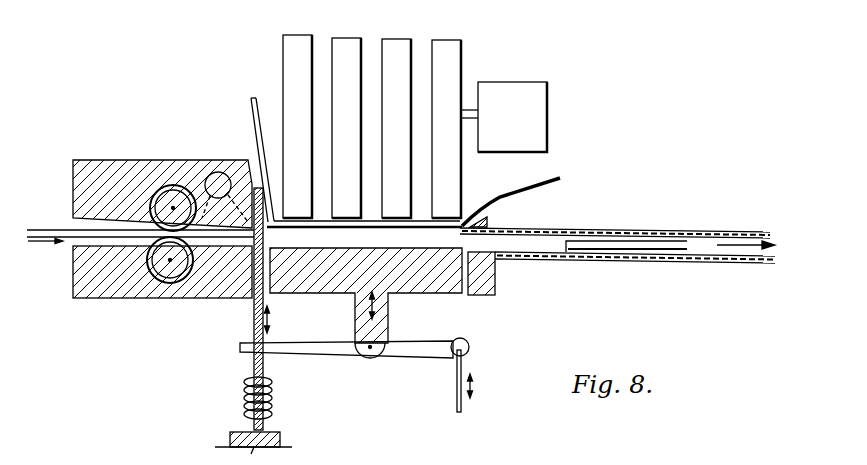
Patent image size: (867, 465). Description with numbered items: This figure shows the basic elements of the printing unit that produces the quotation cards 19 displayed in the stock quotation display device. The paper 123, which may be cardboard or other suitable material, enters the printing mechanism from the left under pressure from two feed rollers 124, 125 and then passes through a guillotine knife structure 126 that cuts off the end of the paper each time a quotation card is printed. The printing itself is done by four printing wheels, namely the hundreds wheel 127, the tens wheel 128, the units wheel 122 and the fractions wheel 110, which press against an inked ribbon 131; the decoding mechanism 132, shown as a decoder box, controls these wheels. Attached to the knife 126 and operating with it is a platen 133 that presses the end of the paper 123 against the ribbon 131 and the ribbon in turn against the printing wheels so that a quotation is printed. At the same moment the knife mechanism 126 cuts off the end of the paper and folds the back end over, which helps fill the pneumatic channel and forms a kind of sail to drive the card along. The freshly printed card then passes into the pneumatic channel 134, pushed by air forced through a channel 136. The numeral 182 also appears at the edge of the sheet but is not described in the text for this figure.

The quotation card 19 is at (603, 245).
The fractions wheel 110 is at (446, 53).
The units wheel 122 is at (398, 47).
The paper 123 is at (54, 204).
The feed roller 124 is at (173, 193).
The feed roller 125 is at (168, 277).
The guillotine knife structure 126 is at (247, 283).
The hundreds wheel 127 is at (290, 60).
The tens wheel 128 is at (345, 45).
The inked ribbon 131 is at (518, 188).
The decoding mechanism 132 is at (543, 122).
The platen 133 is at (335, 287).
The pneumatic channel 134 is at (533, 235).
The channel 136 is at (218, 182).
The reference numeral from adjacent figure 182 is at (777, 457).